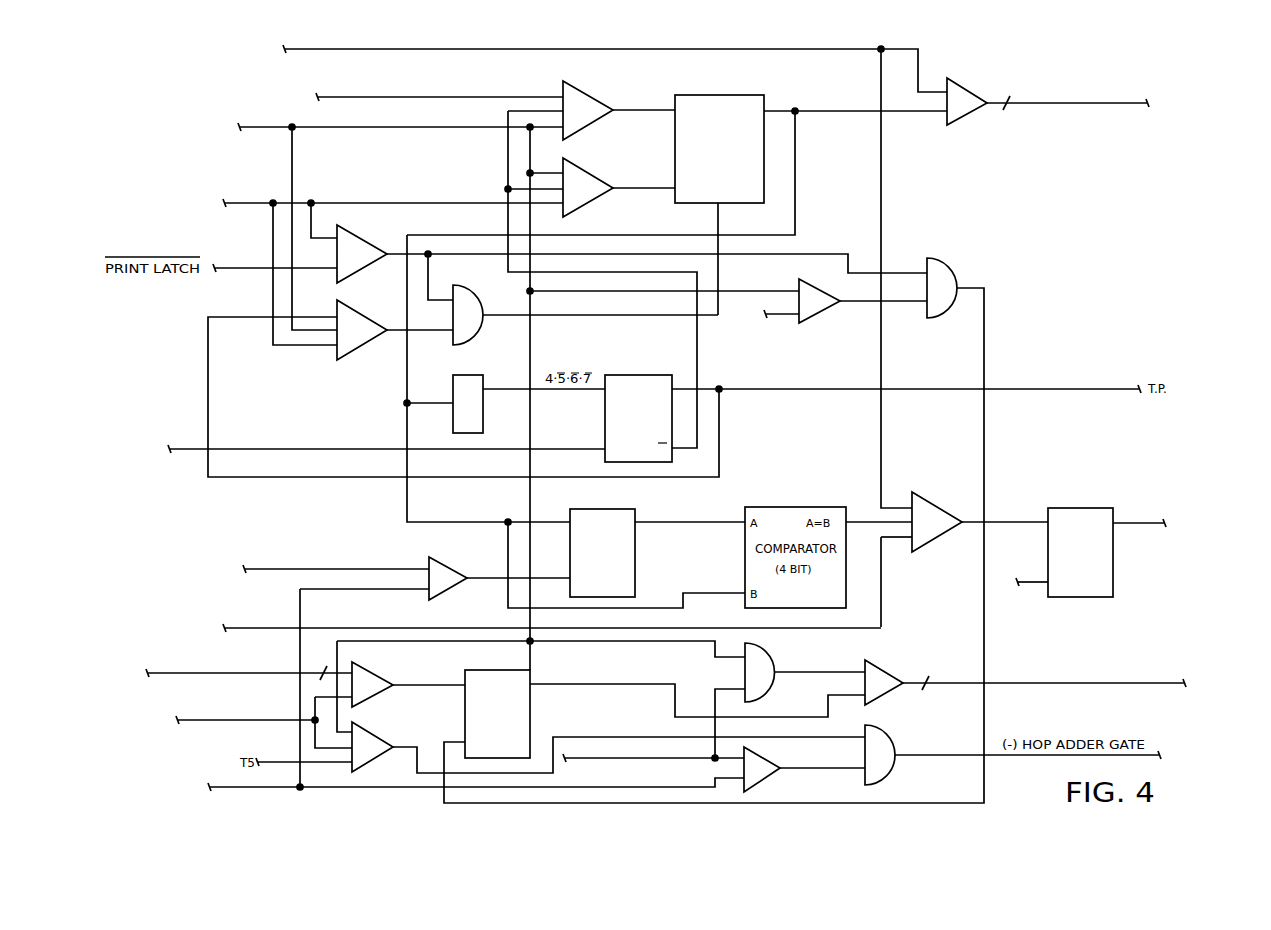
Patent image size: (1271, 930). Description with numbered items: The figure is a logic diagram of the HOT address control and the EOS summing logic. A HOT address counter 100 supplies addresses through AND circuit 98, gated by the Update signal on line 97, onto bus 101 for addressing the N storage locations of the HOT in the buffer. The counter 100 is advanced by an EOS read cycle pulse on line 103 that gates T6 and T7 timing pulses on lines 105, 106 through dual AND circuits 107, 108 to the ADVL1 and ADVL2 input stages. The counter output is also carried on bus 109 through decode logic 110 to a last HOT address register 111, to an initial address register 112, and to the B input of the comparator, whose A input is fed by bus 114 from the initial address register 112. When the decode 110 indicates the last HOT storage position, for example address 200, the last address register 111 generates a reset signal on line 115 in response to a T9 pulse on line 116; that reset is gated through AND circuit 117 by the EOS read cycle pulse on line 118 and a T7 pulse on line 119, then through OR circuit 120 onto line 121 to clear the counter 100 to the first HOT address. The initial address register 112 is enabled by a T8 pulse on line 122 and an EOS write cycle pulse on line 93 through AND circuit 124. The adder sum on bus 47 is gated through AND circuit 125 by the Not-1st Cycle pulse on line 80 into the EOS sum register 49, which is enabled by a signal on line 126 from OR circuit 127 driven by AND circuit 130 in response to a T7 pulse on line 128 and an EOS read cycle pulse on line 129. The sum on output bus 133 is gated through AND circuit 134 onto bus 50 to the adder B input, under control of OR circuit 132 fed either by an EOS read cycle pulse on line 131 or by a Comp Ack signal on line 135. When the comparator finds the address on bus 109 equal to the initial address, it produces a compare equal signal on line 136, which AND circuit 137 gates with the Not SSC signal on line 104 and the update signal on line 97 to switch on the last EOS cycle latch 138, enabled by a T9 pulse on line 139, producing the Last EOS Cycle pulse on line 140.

The update signal line 97 is at (443, 50).
The T6 timing pulse line 105 is at (452, 98).
The EOS read cycle pulse line 103 is at (421, 125).
The T7 timing pulse line 106 is at (262, 204).
The AND circuit 107 is at (588, 97).
The AND circuit 108 is at (590, 176).
The HOT address counter 100 is at (761, 96).
The AND circuit 98 is at (963, 89).
The bus 101 is at (1128, 101).
The EOS read cycle pulse line 118 is at (292, 242).
The T7 timing pulse line 119 is at (275, 296).
The AND circuit 117 is at (348, 323).
The OR circuit 120 is at (474, 296).
The reset signal line 121 is at (573, 309).
The bus 109 is at (796, 211).
The EOS read cycle pulse line 129 is at (762, 290).
The AND circuit 130 is at (812, 284).
The T7 timing pulse line 128 is at (784, 314).
The OR circuit 127 is at (950, 271).
The enable signal line 126 is at (986, 434).
The decode logic 110 is at (483, 413).
The last HOT storage position address 200 is at (677, 368).
The last HOT address register 111 is at (652, 402).
The reset signal line 115 is at (720, 457).
The T9 timing pulse line 116 is at (333, 448).
The initial address register 112 is at (635, 569).
The bus 114 is at (713, 522).
The compare equal signal line 136 is at (868, 521).
The AND circuit 137 is at (927, 500).
The EOS write cycle pulse line 93 is at (412, 568).
The AND circuit 124 is at (450, 563).
The Not SSC signal line 104 is at (277, 627).
The EOS read cycle pulse line 131 is at (643, 643).
The OR circuit 132 is at (772, 669).
The output bus 133 is at (818, 712).
The AND circuit 134 is at (870, 677).
The Comp Ack signal line 135 is at (651, 760).
The bus 50 is at (955, 688).
The bus 47 is at (293, 673).
The AND circuit 125 is at (368, 671).
The EOS sum register 49 is at (530, 718).
The Not-1st Cycle pulse line 80 is at (291, 722).
The T8 timing pulse line 122 is at (272, 786).
The last EOS cycle latch 138 is at (1113, 573).
The T9 line 139 is at (1035, 583).
The Last EOS Cycle pulse line 140 is at (1125, 523).